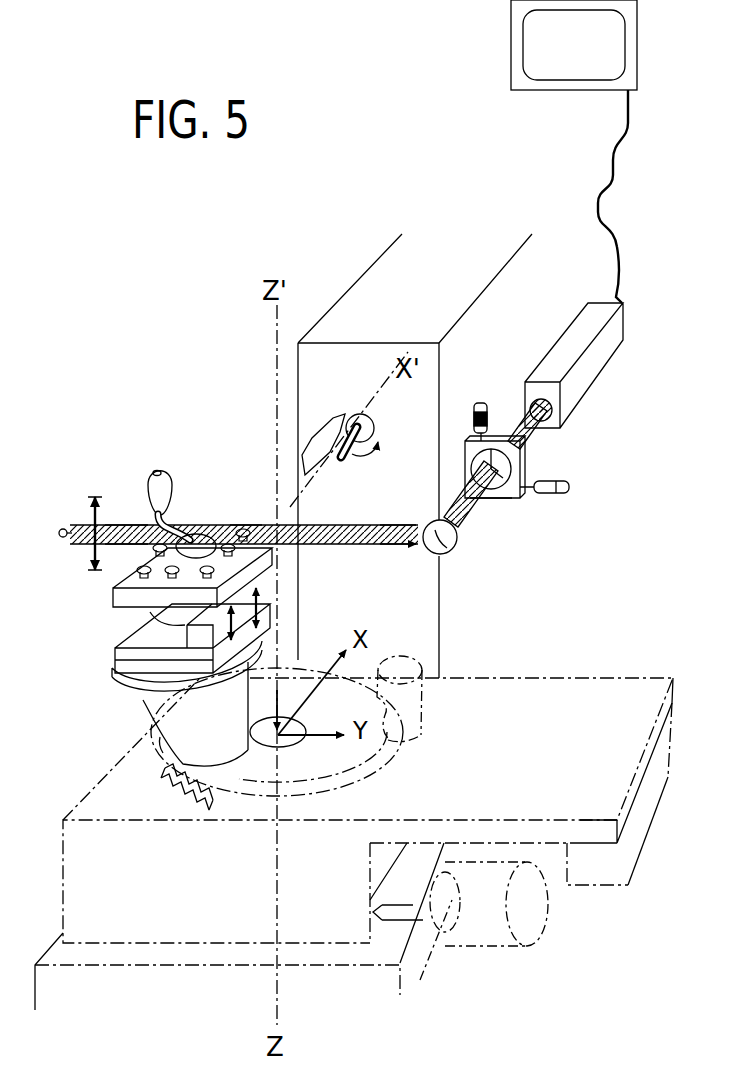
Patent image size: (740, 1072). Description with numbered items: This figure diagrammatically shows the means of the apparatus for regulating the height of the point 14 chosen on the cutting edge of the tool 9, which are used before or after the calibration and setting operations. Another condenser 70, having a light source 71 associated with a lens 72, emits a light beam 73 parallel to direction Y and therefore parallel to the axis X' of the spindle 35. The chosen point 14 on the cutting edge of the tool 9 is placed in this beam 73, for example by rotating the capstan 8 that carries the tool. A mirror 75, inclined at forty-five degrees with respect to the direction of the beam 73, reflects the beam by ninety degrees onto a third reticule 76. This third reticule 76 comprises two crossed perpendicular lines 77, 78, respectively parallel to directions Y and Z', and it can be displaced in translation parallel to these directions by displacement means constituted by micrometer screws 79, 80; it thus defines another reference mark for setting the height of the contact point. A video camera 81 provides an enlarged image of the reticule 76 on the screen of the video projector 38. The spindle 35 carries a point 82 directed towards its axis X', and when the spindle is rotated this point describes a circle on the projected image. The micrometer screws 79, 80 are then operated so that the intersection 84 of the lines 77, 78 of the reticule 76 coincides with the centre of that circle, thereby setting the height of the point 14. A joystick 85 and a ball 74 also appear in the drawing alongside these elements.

The video projector 38 is at (518, 18).
The video camera 81 is at (590, 315).
The spindle 35 is at (355, 414).
The point 82 is at (312, 478).
The micrometer screw 79 is at (482, 402).
The third reticule 76 is at (530, 505).
The intersection 84 is at (483, 460).
The crossed perpendicular line 77 is at (512, 497).
The crossed perpendicular line 78 is at (527, 460).
The micrometer screw 80 is at (560, 490).
The mirror 75 is at (458, 530).
The ball joint 74 is at (450, 556).
The point 14 is at (300, 546).
The condenser 70 is at (68, 504).
The light source 71 is at (65, 540).
The lens 72 is at (100, 495).
The light beam 73 is at (218, 525).
The joystick 85 is at (168, 486).
The tool 9 is at (272, 575).
The capstan 8 is at (130, 705).